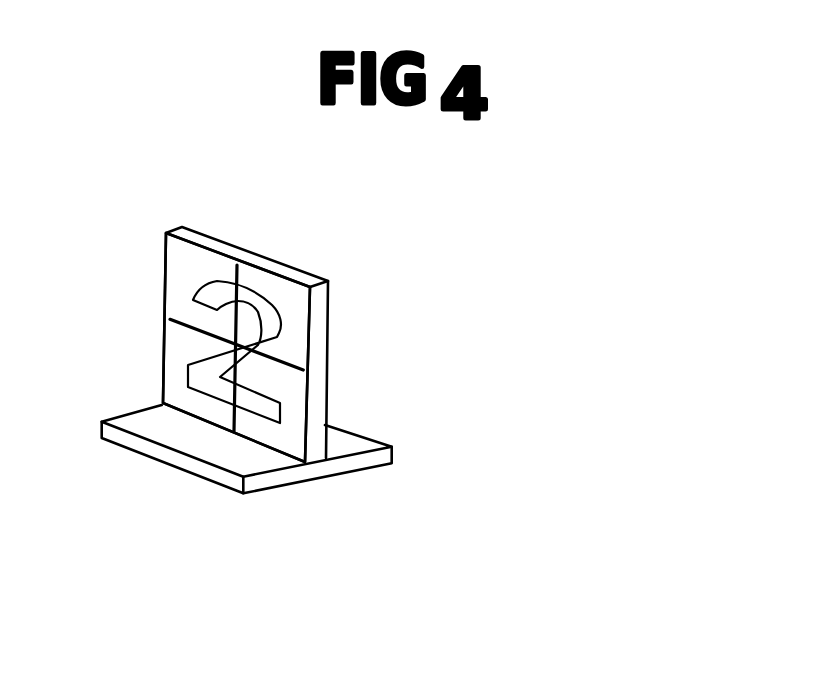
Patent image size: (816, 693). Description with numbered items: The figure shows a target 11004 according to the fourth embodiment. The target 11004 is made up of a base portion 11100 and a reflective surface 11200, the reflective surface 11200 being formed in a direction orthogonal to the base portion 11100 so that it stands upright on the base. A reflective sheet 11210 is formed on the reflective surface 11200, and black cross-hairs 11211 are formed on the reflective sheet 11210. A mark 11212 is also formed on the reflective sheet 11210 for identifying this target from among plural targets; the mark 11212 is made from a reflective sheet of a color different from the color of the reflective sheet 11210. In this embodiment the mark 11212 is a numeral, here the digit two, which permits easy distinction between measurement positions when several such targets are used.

The target 11004 is at (357, 622).
The base portion 11100 is at (376, 457).
The reflective surface 11200 is at (153, 258).
The reflective sheet 11210 is at (186, 272).
The black cross-hairs 11211 is at (188, 330).
The mark 11212 is at (272, 332).